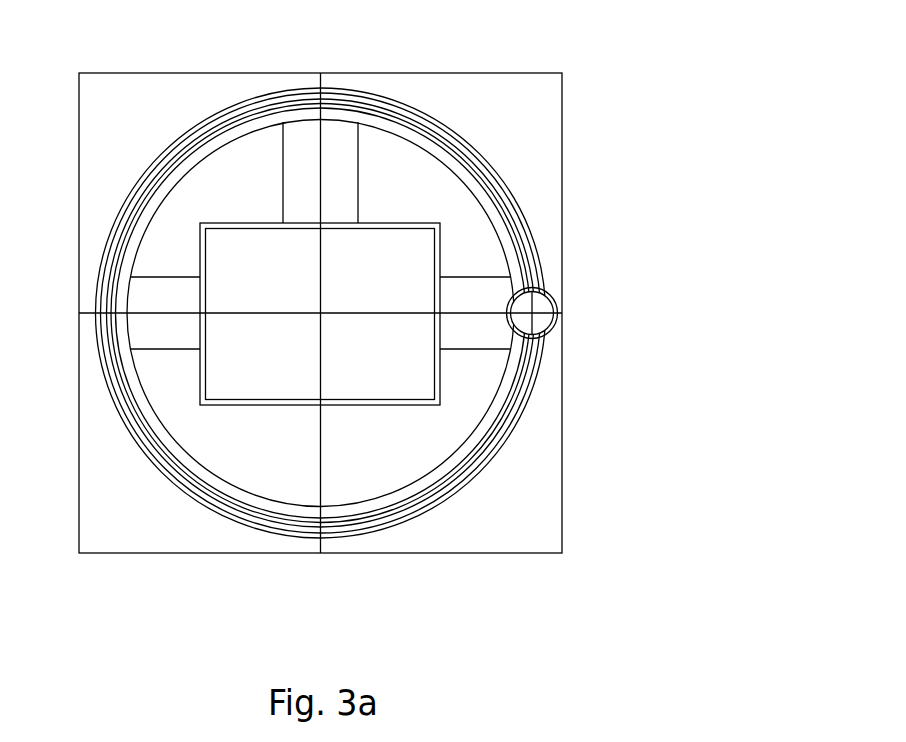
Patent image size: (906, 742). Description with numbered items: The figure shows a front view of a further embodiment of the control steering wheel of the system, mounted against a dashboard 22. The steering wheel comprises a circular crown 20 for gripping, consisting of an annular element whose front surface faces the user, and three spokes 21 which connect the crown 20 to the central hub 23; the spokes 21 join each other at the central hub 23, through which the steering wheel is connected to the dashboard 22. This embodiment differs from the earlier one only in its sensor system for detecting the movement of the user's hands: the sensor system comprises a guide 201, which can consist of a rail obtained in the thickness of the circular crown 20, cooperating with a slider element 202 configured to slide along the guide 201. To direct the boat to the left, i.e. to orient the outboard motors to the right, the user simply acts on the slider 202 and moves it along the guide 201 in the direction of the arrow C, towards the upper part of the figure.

The circular crown 20 is at (412, 279).
The guide 201 is at (436, 137).
The slider element 202 is at (558, 319).
The spokes 21 is at (467, 333).
The dashboard 22 is at (545, 531).
The central hub 23 is at (235, 388).
The arrow C is at (567, 227).